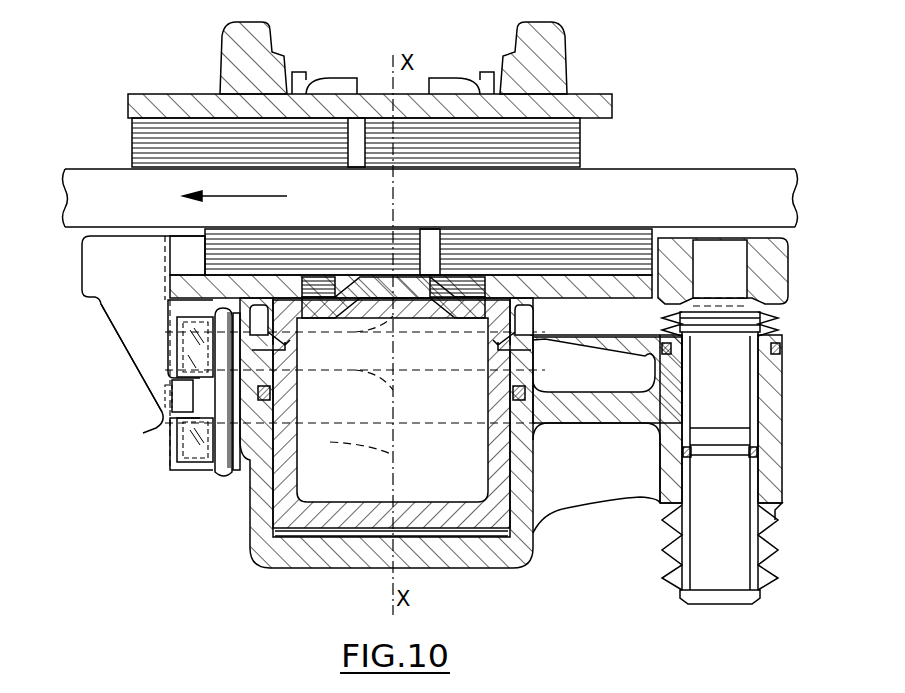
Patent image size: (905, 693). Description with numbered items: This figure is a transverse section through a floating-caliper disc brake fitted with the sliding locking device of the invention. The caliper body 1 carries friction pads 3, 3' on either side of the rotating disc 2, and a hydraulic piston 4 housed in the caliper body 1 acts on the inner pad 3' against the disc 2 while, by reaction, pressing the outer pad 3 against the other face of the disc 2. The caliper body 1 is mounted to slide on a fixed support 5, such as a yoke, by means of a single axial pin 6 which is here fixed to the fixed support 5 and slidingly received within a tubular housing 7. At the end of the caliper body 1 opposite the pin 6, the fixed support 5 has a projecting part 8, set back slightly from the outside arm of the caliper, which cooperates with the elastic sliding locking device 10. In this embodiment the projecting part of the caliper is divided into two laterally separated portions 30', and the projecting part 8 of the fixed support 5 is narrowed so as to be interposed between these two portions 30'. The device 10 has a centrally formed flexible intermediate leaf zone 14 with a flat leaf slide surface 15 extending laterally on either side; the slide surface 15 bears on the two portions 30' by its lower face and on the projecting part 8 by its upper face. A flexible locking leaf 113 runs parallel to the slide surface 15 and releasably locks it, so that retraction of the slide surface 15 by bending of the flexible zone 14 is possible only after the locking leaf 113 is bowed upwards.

The caliper body 1 is at (540, 42).
The rotating disc 2 is at (763, 167).
The outer friction pad 3 is at (390, 128).
The inner friction pad 3' is at (415, 244).
The hydraulic piston 4 is at (451, 495).
The fixed support 5 is at (95, 258).
The axial pin 6 is at (716, 565).
The tubular housing 7 is at (772, 410).
The projecting part 8 is at (152, 391).
The elastic sliding locking device 10 is at (213, 482).
The flexible intermediate leaf zone 14 is at (166, 413).
The flat leaf slide surface 15 is at (191, 458).
The portions of the projecting part of the caliper 30' is at (162, 395).
The flexible locking leaf 113 is at (224, 462).